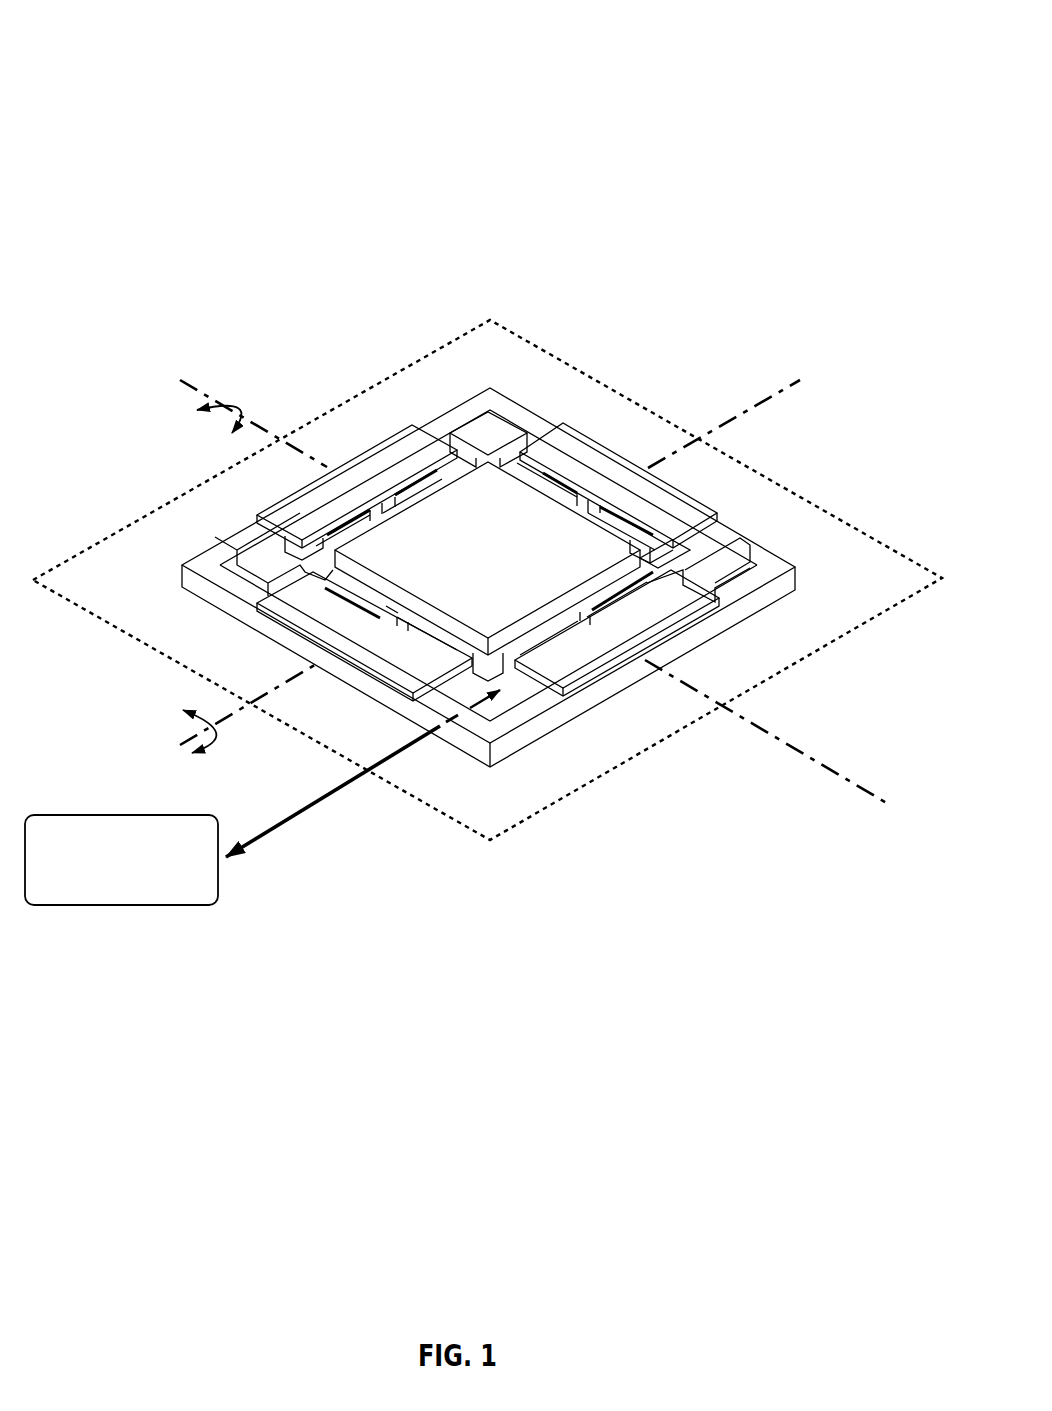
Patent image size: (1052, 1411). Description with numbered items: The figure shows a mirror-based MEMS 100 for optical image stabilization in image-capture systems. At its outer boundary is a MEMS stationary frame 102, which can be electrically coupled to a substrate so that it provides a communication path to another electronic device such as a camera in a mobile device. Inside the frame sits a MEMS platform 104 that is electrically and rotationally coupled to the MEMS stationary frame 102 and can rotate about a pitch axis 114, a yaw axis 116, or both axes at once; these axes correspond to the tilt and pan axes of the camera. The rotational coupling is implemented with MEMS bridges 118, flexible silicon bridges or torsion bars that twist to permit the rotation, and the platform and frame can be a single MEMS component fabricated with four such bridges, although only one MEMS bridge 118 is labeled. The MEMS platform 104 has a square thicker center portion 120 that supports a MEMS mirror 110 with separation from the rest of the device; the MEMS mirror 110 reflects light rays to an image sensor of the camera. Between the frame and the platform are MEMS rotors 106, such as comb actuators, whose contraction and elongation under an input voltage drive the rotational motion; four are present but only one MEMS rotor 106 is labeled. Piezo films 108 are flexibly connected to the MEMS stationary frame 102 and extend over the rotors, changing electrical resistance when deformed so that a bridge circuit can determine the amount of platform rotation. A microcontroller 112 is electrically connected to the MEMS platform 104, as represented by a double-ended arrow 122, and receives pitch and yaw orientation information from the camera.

The mirror-based MEMS 100 is at (157, 41).
The MEMS stationary frame 102 is at (446, 416).
The MEMS platform 104 is at (508, 692).
The MEMS rotor 106 is at (655, 582).
The piezo film 108 is at (582, 450).
The MEMS mirror 110 is at (463, 333).
The microcontroller 112 is at (121, 860).
The pitch axis 114 is at (473, 572).
The yaw axis 116 is at (416, 583).
The MEMS bridge 118 is at (573, 622).
The thicker center portion 120 is at (487, 478).
The double-ended arrow 122 is at (315, 808).